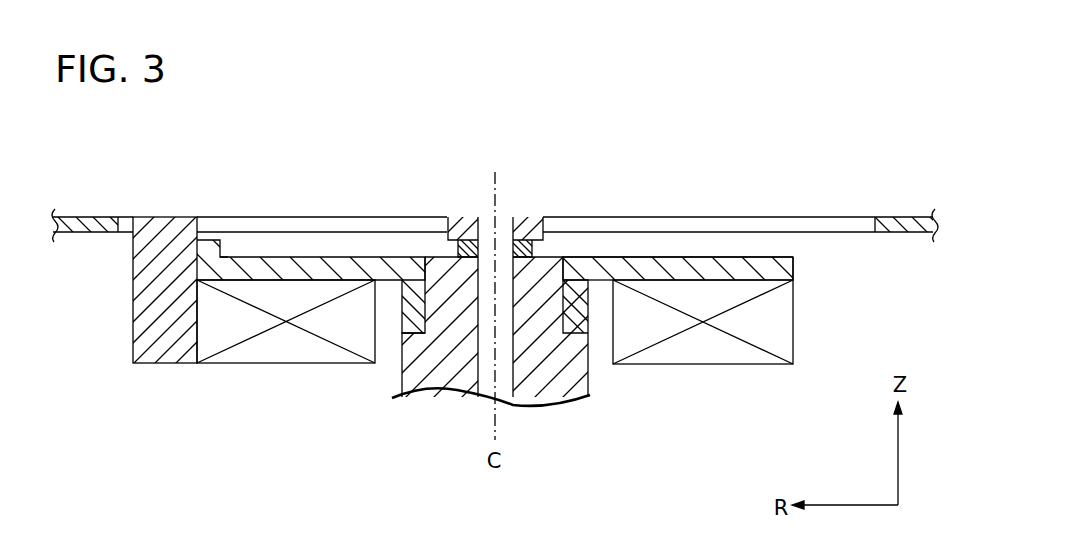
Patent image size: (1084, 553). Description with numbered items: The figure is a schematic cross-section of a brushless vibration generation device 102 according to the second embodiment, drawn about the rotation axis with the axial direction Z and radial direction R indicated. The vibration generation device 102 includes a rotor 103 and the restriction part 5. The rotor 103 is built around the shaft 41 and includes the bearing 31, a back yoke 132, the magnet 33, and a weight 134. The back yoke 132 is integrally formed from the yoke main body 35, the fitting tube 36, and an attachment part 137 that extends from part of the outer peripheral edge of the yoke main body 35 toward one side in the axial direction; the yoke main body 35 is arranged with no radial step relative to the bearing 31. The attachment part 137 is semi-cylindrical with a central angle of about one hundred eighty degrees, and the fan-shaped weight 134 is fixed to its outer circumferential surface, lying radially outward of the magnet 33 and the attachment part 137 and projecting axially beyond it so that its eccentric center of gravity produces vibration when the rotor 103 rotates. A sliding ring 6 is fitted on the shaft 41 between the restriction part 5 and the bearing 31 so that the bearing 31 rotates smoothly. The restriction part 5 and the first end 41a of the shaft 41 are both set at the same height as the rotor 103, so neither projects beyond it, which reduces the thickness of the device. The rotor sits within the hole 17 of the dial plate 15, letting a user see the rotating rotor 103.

The dial plate 15 is at (83, 220).
The weight 134 is at (165, 223).
The attachment part 137 is at (208, 247).
The hole 17 is at (288, 218).
The first end of the shaft 41a is at (485, 216).
The restriction part 5 is at (527, 223).
The sliding ring 6 is at (527, 248).
The yoke main body 35 is at (705, 263).
The back yoke 132 is at (767, 257).
The vibration generation device 102 is at (803, 268).
The rotor 103 is at (803, 322).
The magnet 33 is at (285, 357).
The fitting tube 36 is at (405, 310).
The shaft 41 is at (473, 343).
The bearing 31 is at (552, 398).